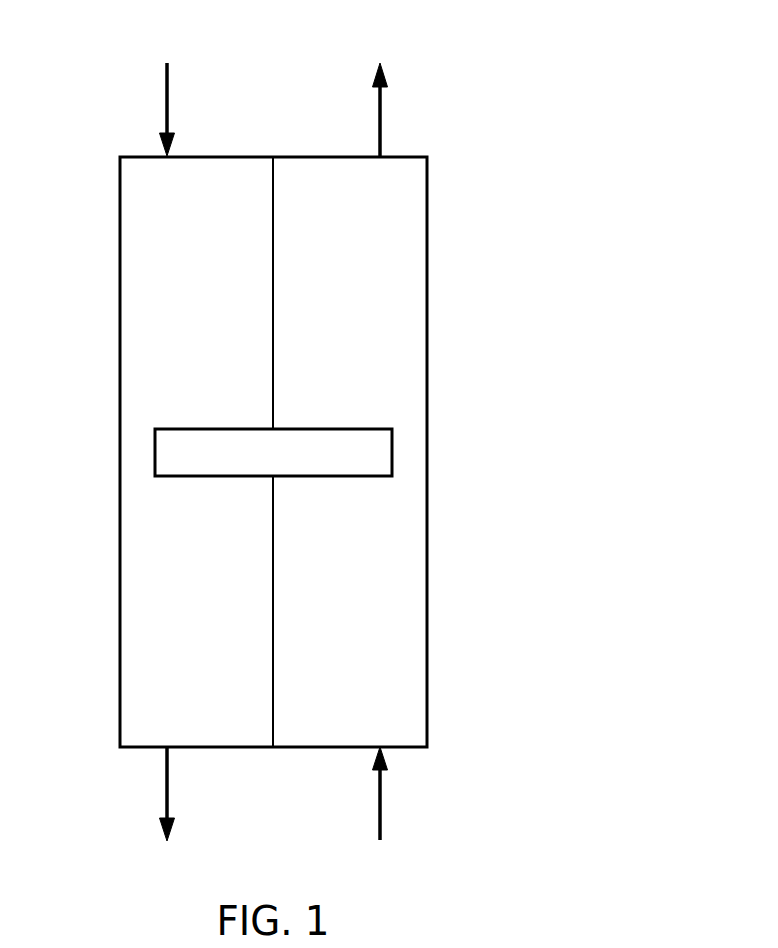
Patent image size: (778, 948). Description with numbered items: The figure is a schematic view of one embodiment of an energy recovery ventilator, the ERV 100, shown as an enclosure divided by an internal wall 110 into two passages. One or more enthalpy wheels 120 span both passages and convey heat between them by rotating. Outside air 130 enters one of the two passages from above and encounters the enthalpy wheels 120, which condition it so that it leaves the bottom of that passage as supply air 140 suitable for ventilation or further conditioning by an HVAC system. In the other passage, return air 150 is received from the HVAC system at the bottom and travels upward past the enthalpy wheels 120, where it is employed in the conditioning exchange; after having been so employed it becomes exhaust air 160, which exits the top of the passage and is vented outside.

The ERV 100 is at (110, 302).
The internal wall 110 is at (272, 292).
The enthalpy wheels 120 is at (214, 478).
The outside air 130 is at (166, 104).
The supply air 140 is at (166, 790).
The return air 150 is at (381, 800).
The exhaust air 160 is at (381, 115).